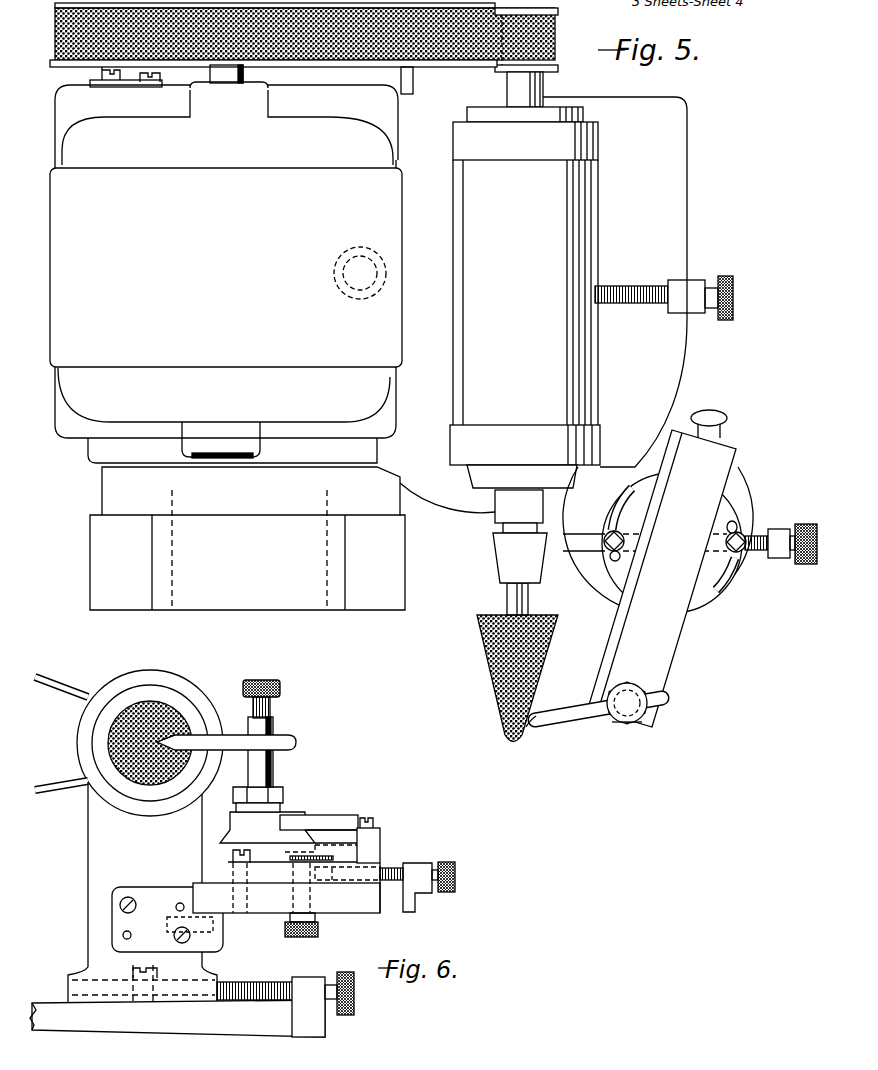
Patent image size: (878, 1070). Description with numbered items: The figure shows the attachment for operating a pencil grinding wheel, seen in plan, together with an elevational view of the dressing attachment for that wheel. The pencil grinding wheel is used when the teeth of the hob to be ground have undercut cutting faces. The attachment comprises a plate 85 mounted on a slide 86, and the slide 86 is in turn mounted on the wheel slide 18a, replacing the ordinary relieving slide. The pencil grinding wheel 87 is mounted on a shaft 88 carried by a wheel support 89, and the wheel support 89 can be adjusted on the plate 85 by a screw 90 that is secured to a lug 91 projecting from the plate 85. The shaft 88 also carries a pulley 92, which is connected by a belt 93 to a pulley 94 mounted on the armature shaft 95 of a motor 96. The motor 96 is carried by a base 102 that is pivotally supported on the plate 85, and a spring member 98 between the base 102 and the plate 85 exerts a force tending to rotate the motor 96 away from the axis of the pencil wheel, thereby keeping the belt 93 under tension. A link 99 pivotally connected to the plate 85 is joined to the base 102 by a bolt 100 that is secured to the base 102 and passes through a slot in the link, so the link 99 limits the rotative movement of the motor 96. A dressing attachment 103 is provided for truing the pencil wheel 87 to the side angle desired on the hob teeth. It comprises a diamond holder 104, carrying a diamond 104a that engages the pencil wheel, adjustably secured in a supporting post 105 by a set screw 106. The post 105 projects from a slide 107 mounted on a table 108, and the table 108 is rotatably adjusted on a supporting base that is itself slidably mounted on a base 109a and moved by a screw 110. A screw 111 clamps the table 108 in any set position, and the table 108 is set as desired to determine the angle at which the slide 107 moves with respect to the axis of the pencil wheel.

In FIG. 5, the wheel slide 18a is at (247, 550).
In FIG. 5, the plate 85 is at (688, 193).
In FIG. 6, the plate 85 is at (240, 1030).
In FIG. 5, the slide 86 is at (251, 491).
In FIG. 5, the pencil grinding wheel 87 is at (490, 683).
In FIG. 6, the pencil grinding wheel 87 is at (157, 688).
In FIG. 5, the shaft 88 is at (546, 85).
In FIG. 5, the wheel support 89 is at (590, 210).
In FIG. 6, the wheel support 89 is at (88, 815).
In FIG. 5, the screw 90 is at (635, 286).
In FIG. 6, the screw 90 is at (250, 983).
In FIG. 5, the lug 91 is at (700, 281).
In FIG. 6, the lug 91 is at (312, 978).
In FIG. 5, the pulley 92 is at (557, 14).
In FIG. 5, the belt 93 is at (432, 80).
In FIG. 6, the belt 93 is at (75, 690).
In FIG. 5, the pulley 94 is at (371, 67).
In FIG. 5, the armature shaft 95 is at (246, 77).
In FIG. 5, the motor 96 is at (394, 246).
In FIG. 5, the spring member 98 is at (334, 285).
In FIG. 5, the link 99 is at (133, 87).
In FIG. 5, the bolt 100 is at (100, 74).
In FIG. 5, the base 102 is at (366, 440).
In FIG. 5, the dressing attachment 103 is at (758, 493).
In FIG. 6, the dressing attachment 103 is at (327, 785).
In FIG. 5, the diamond holder 104 is at (568, 700).
In FIG. 6, the diamond holder 104 is at (292, 742).
In FIG. 5, the diamond 104a is at (528, 731).
In FIG. 6, the diamond 104a is at (170, 738).
In FIG. 5, the supporting post 105 is at (650, 708).
In FIG. 6, the supporting post 105 is at (274, 727).
In FIG. 5, the set screw 106 is at (630, 726).
In FIG. 6, the set screw 106 is at (282, 688).
In FIG. 5, the slide 107 is at (722, 455).
In FIG. 6, the slide 107 is at (315, 825).
In FIG. 5, the table 108 is at (697, 606).
In FIG. 6, the table 108 is at (380, 833).
In FIG. 5, the base 109a is at (588, 586).
In FIG. 6, the base 109a is at (348, 912).
In FIG. 5, the screw 110 is at (760, 535).
In FIG. 6, the screw 110 is at (396, 867).
In FIG. 5, the screw 111 is at (731, 530).
In FIG. 6, the screw 111 is at (370, 818).